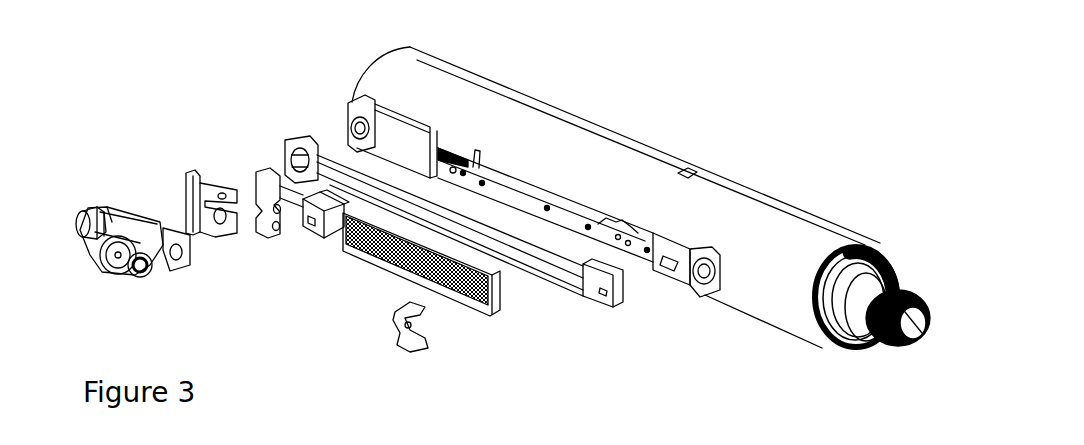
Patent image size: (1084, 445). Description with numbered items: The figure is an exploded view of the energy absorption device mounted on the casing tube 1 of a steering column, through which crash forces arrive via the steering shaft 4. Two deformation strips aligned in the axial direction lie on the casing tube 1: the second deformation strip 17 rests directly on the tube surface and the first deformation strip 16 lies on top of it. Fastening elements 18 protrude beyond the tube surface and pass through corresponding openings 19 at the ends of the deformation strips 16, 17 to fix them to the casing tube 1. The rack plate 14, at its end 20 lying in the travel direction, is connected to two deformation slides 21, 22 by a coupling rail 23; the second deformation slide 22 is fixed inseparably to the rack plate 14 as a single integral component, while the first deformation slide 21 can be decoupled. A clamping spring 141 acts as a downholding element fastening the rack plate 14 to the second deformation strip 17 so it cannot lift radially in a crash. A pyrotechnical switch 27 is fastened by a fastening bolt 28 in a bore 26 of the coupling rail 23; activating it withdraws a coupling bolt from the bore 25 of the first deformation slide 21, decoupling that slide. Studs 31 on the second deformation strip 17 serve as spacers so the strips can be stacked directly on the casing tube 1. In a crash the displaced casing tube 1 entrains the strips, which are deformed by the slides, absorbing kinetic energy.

The casing tube 1 is at (680, 151).
The steering shaft 4 is at (910, 291).
The rack plate 14 is at (463, 307).
The clamping spring 141 is at (395, 335).
The first deformation strip 16 is at (409, 198).
The second deformation strip 17 is at (527, 198).
The fastening element 18 is at (377, 108).
The opening 19 is at (288, 138).
The end 20 is at (360, 263).
The first deformation slide 21 is at (185, 180).
The second deformation slide 22 is at (318, 212).
The coupling rail 23 is at (258, 170).
The bore 25 is at (218, 228).
The bore 26 is at (275, 231).
The pyrotechnical switch 27 is at (110, 270).
The fastening bolt 28 is at (157, 276).
The studs 31 is at (628, 228).